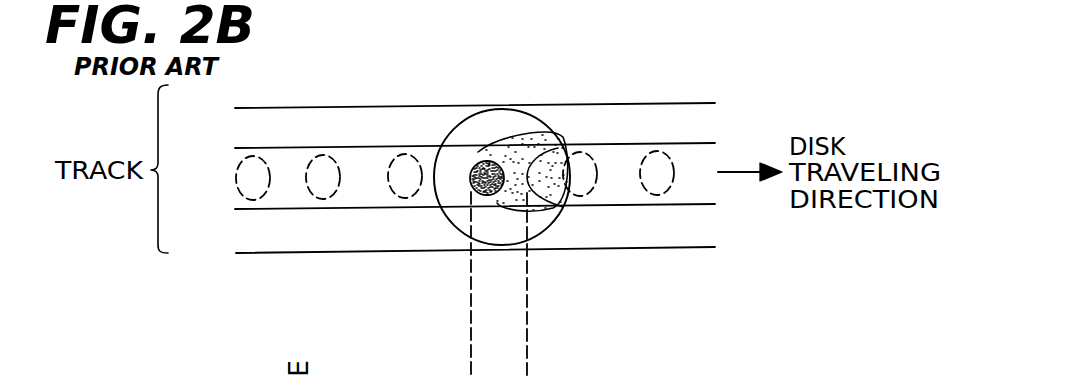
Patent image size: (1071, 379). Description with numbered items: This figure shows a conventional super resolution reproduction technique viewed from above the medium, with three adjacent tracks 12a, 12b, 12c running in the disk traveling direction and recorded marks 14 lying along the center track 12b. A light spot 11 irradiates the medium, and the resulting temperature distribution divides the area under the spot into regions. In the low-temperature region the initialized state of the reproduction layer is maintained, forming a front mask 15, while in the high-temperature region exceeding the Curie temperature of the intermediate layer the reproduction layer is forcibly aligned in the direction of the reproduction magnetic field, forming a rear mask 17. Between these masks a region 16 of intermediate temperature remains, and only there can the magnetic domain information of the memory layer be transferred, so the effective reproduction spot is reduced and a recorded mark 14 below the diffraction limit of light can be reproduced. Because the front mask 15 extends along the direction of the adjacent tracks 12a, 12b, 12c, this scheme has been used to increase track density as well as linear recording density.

The light spot 11 is at (438, 214).
The track 12a is at (240, 127).
The track 12b is at (240, 182).
The track 12c is at (240, 237).
The recorded mark 14 is at (497, 203).
The front mask 15 is at (467, 135).
The heated region 16 is at (520, 140).
The rear mask 17 is at (562, 145).